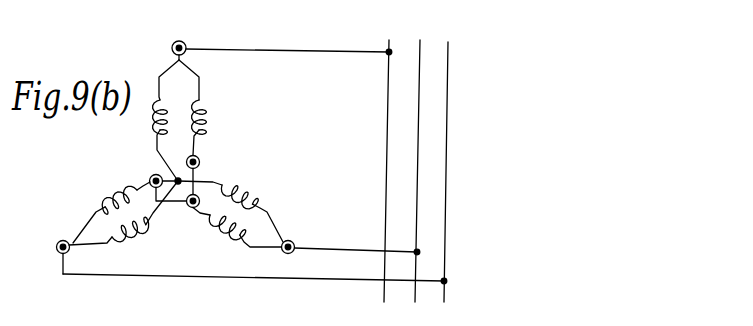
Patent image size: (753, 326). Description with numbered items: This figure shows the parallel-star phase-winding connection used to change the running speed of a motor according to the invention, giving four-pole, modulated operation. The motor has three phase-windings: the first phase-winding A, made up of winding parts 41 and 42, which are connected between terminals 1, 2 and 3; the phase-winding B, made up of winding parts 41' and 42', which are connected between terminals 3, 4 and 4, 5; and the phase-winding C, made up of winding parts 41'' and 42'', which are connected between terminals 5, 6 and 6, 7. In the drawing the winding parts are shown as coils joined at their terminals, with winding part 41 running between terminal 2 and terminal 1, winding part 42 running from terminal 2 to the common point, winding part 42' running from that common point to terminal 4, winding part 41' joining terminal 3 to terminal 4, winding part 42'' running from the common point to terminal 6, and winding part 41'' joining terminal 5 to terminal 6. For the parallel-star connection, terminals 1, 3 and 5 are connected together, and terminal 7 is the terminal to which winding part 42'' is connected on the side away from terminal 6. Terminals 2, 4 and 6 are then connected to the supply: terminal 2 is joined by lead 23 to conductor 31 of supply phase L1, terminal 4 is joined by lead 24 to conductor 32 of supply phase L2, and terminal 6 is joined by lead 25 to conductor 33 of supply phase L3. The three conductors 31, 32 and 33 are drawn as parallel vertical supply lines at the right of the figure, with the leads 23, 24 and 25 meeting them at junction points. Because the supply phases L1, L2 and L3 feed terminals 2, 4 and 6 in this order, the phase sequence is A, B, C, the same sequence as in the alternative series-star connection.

The terminal 1 is at (200, 162).
The terminal 2 is at (179, 41).
The terminal 3 is at (188, 206).
The terminal 4 is at (293, 243).
The terminal 5 is at (149, 180).
The terminal 6 is at (56, 247).
The terminal 7 is at (176, 179).
The lead 23 is at (324, 51).
The lead 24 is at (354, 250).
The lead 25 is at (287, 278).
The conductor 31 is at (399, 157).
The conductor 32 is at (430, 157).
The conductor 33 is at (465, 157).
The winding part 41 is at (218, 107).
The winding part 42 is at (139, 120).
The winding part 41' is at (237, 240).
The winding part 42' is at (258, 200).
The winding part 41'' is at (103, 205).
The winding part 42'' is at (123, 227).
The first phase-winding A is at (218, 107).
The phase-winding B is at (237, 243).
The phase-winding C is at (97, 205).
The supply phase L1 is at (387, 144).
The supply phase L2 is at (417, 144).
The supply phase L3 is at (446, 143).